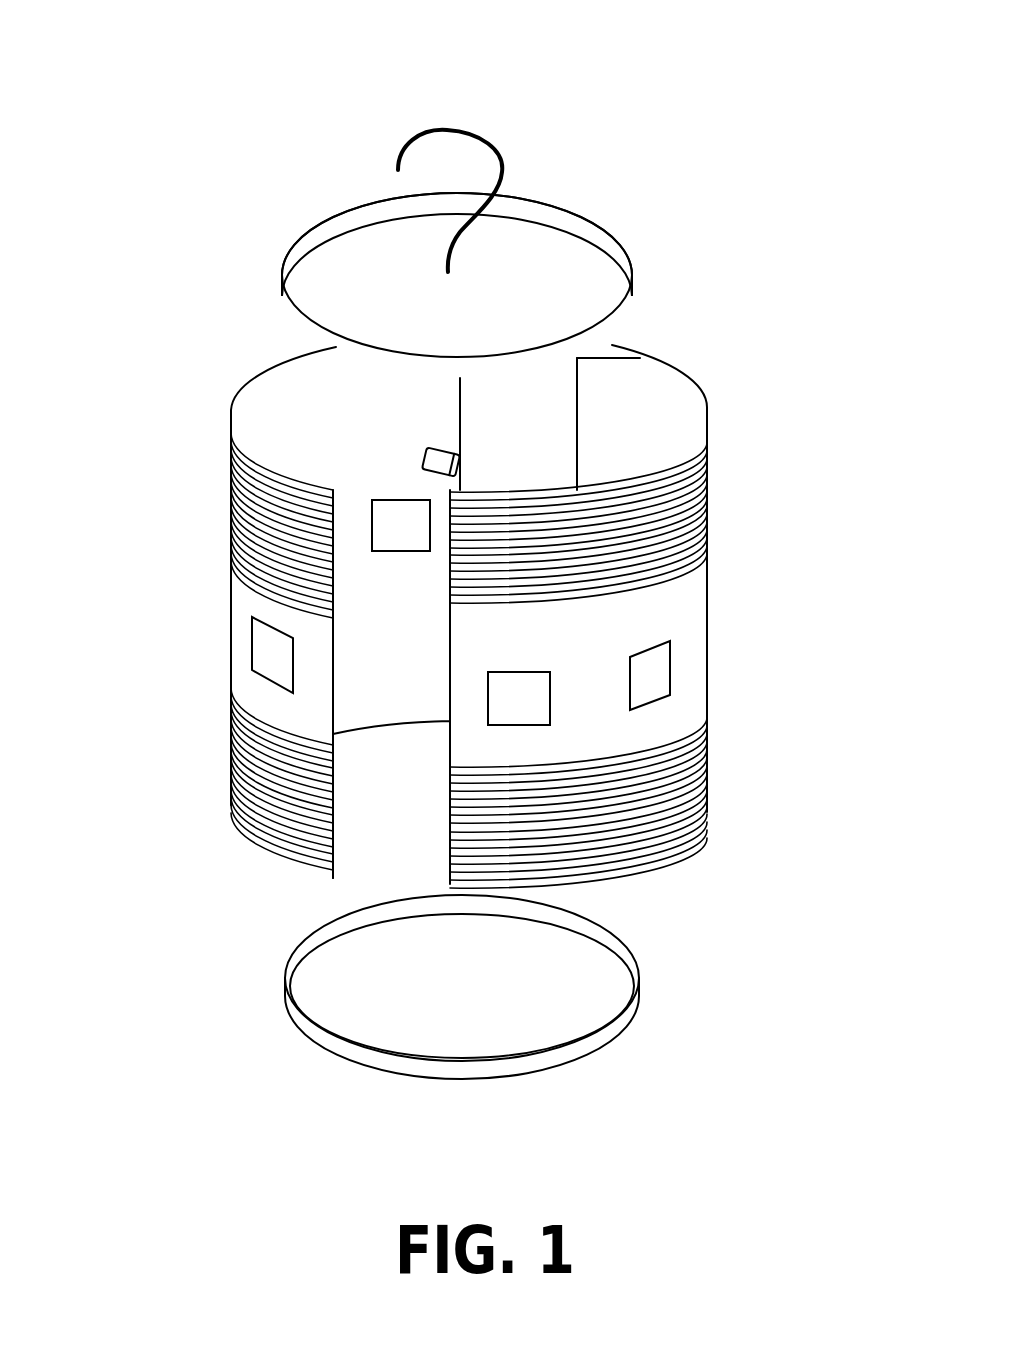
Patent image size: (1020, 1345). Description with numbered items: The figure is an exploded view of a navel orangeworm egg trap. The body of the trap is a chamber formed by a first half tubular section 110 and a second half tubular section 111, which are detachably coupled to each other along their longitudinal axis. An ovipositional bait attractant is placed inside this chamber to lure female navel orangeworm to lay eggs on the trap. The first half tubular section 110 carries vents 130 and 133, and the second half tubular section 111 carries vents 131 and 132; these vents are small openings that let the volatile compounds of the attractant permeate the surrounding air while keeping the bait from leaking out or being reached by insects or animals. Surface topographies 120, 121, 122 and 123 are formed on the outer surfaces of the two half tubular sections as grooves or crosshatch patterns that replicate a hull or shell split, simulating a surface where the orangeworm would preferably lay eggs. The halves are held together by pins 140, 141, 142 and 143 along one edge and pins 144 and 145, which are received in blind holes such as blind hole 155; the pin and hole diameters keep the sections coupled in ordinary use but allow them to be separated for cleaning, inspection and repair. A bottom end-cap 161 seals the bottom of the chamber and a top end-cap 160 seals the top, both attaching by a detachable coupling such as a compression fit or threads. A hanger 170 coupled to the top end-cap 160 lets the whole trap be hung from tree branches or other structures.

The first half tubular section 110 is at (231, 418).
The second half tubular section 111 is at (607, 344).
The surface topography 120 is at (250, 478).
The surface topography 121 is at (277, 773).
The surface topography 122 is at (647, 523).
The surface topography 123 is at (625, 821).
The vent 130 is at (278, 662).
The vent 131 is at (517, 703).
The vent 132 is at (653, 672).
The vent 133 is at (401, 527).
The pin 140 is at (350, 508).
The pin 141 is at (350, 622).
The pin 142 is at (347, 752).
The pin 143 is at (353, 866).
The pin 144 is at (545, 364).
The pin 145 is at (558, 480).
The blind hole 155 is at (440, 455).
The top end-cap 160 is at (545, 255).
The bottom end-cap 161 is at (537, 1067).
The hanger 170 is at (447, 128).